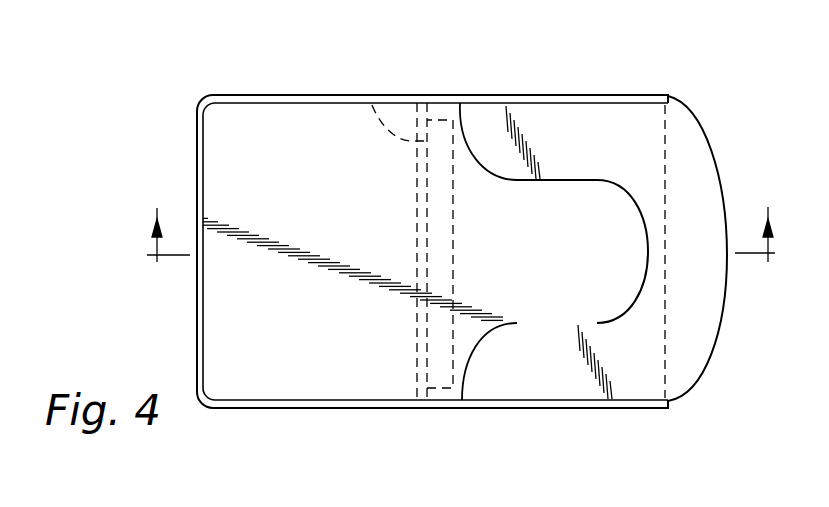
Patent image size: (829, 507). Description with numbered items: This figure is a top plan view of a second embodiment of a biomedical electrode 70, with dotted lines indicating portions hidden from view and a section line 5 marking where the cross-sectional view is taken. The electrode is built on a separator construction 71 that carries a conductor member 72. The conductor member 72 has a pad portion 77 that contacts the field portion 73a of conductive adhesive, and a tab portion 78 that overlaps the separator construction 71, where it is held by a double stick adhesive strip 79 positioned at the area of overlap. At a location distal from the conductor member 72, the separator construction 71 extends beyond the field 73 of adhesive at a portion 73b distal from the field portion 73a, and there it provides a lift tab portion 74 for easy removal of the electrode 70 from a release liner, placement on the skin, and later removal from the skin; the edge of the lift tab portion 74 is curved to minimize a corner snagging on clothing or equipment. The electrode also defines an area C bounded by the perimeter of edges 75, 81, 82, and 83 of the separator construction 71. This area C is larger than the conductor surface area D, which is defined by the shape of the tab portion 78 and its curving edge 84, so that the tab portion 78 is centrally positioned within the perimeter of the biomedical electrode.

The biomedical electrode 70 is at (419, 80).
The pad portion 77 is at (280, 118).
The edge 82 is at (371, 105).
The double stick adhesive strip 79 is at (467, 143).
The edge 81 is at (532, 105).
The area C is at (599, 117).
The conductor surface area D is at (599, 218).
The tab portion 78 is at (513, 221).
The edge 83 is at (490, 405).
The separator construction 71 is at (597, 382).
The conductor member 72 is at (335, 390).
The field portion 73a is at (260, 408).
The field of adhesive 73 is at (395, 409).
The portion 73b is at (527, 408).
The lift tab portion 74 is at (707, 290).
The edge 75 is at (711, 352).
The curving edge 84 is at (630, 200).
The section line 5- 5 is at (456, 234).